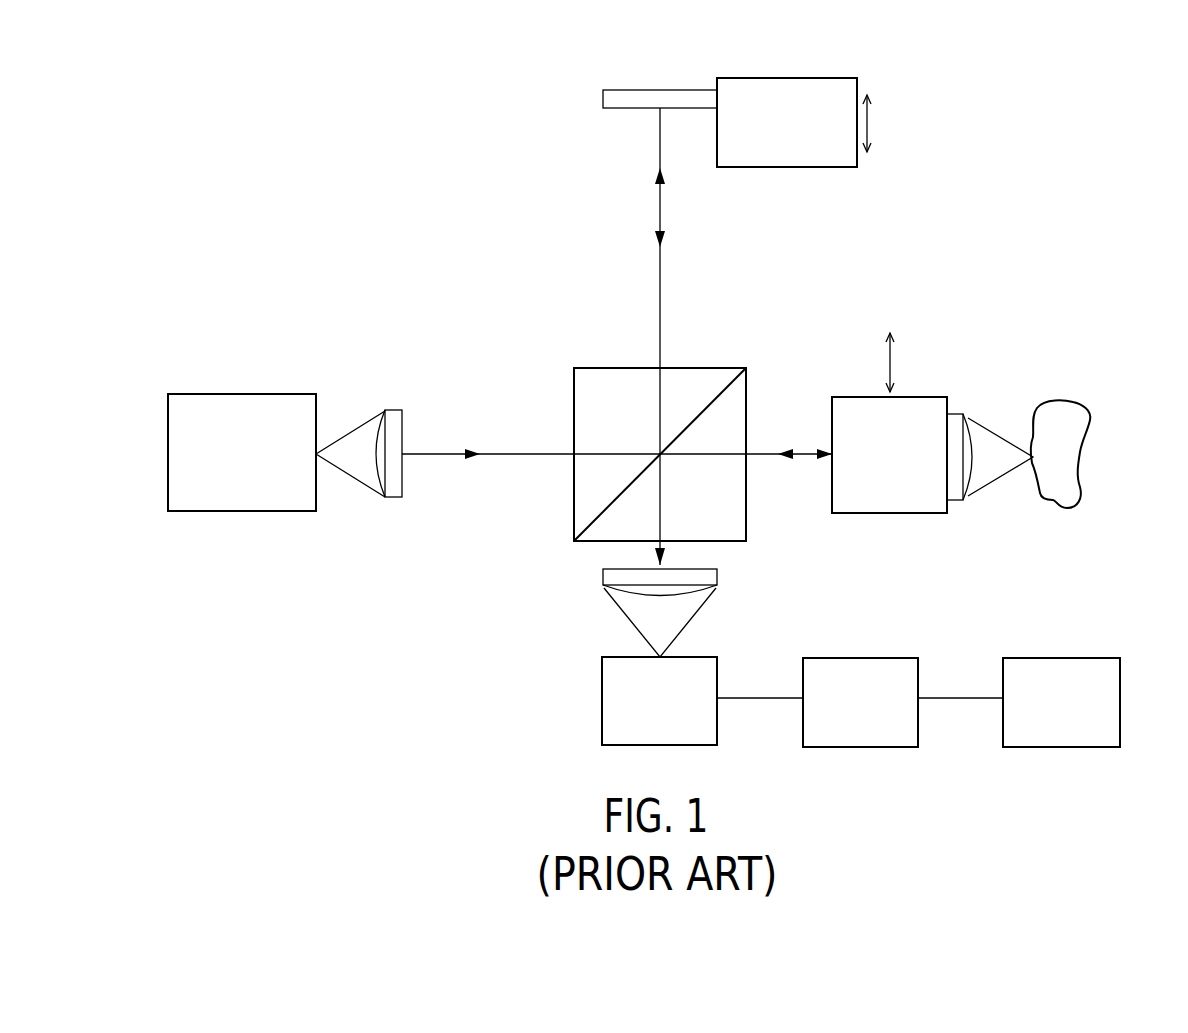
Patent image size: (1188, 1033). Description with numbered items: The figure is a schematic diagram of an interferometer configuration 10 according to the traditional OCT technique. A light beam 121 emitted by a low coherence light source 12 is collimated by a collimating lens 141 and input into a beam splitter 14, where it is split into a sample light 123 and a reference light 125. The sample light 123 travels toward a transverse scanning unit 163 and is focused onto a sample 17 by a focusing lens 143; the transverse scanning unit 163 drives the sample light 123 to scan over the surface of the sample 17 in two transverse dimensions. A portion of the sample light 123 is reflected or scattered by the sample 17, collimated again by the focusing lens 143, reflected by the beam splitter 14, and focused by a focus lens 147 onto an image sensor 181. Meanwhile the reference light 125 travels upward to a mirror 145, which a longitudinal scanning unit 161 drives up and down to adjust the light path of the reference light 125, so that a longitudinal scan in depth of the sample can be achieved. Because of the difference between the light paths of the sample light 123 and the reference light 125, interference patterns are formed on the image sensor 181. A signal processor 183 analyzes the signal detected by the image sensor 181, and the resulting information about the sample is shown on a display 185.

The optical coherence tomography system 10 is at (289, 169).
The low coherence light source 12 is at (222, 393).
The collimating lens 141 is at (385, 412).
The light beam 121 is at (449, 450).
The beam splitter 14 is at (600, 368).
The reference light 125 is at (660, 290).
The mirror 145 is at (605, 95).
The longitudinal scanning unit 161 is at (805, 167).
The sample light 123 is at (770, 458).
The transverse scanning unit 163 is at (862, 397).
The focusing lens 143 is at (960, 410).
The sample 17 is at (1090, 402).
The focus lens 147 is at (603, 575).
The image sensor 181 is at (602, 690).
The signal processor 183 is at (890, 658).
The display 185 is at (1092, 658).